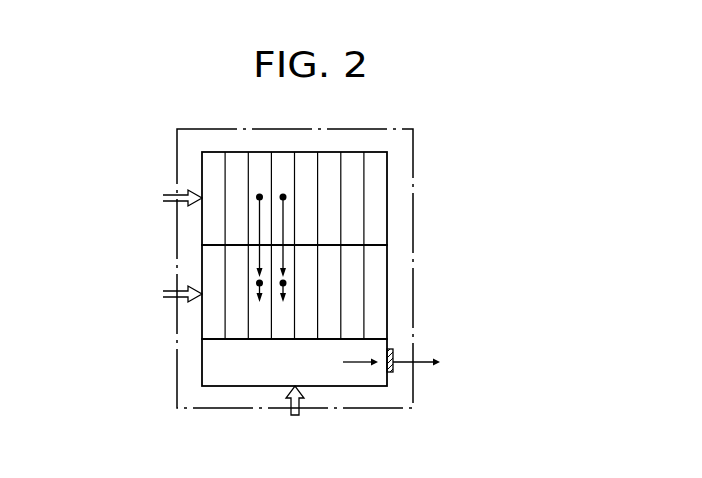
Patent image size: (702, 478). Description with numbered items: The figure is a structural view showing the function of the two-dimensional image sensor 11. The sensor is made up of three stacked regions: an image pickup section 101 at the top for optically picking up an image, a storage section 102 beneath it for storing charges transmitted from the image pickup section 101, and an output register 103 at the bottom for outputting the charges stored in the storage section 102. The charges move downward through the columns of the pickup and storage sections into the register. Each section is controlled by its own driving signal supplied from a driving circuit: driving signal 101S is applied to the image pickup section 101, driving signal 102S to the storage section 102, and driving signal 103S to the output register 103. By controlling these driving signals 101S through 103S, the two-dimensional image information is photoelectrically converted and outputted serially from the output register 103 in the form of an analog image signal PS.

The two-dimensional image sensor 11 is at (413, 189).
The image pickup section 101 is at (200, 153).
The storage section 102 is at (202, 323).
The output register 103 is at (370, 387).
The driving signal 101S is at (155, 198).
The driving signal 102S is at (155, 293).
The driving signal 103S is at (300, 417).
The analog image signal PS is at (432, 363).